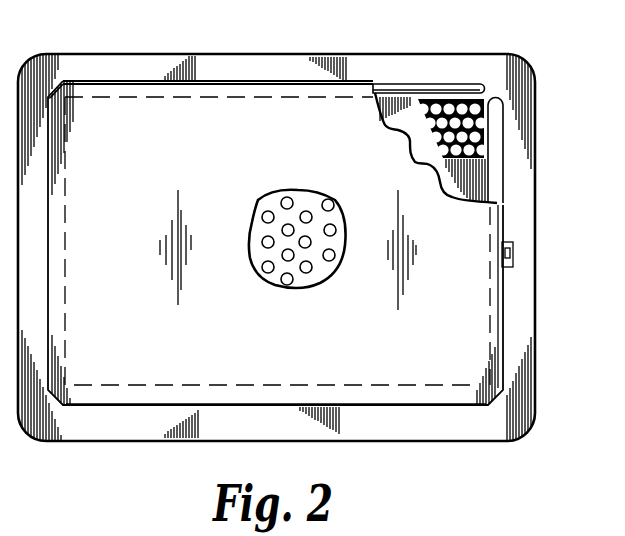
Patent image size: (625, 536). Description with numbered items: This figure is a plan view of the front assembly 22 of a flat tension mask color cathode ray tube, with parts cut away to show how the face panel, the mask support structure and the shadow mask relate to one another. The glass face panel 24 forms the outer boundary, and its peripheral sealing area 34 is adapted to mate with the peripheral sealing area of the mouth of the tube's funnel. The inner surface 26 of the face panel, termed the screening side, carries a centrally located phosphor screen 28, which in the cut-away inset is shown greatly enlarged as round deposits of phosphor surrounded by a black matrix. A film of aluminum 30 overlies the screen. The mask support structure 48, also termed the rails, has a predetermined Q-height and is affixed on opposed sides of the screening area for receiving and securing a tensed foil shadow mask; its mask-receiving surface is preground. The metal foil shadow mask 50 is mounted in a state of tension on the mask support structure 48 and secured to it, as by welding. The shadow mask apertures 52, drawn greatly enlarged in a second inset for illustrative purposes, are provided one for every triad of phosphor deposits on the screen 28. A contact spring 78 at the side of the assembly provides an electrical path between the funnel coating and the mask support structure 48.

The front assembly 22 is at (95, 465).
The glass face panel 24 is at (535, 350).
The inner surface of face panel 26 is at (451, 60).
The phosphor screen 28 is at (478, 137).
The film of aluminum 30 is at (453, 177).
The peripheral sealing area 34 is at (262, 67).
The mask support structure 48 is at (436, 83).
The metal foil shadow mask 50 is at (263, 340).
The shadow mask apertures 52 is at (303, 290).
The contact spring 78 is at (514, 250).